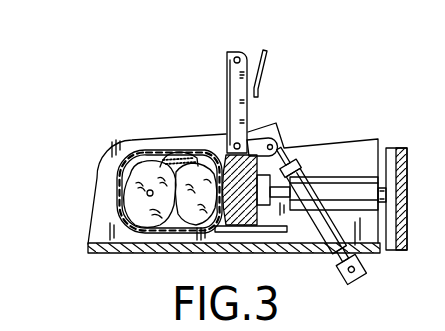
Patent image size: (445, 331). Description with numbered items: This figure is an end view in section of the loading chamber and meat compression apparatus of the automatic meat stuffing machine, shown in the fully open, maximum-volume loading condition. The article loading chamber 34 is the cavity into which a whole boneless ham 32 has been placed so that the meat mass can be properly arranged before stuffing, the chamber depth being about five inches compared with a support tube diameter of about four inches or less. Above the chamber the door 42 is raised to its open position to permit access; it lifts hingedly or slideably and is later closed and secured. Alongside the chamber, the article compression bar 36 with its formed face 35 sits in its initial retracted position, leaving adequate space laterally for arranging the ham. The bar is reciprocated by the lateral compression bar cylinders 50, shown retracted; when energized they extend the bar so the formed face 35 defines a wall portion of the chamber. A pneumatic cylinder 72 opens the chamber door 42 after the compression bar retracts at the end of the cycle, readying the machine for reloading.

The whole boneless ham 32 is at (172, 158).
The article loading chamber 34 is at (117, 182).
The formed face 35 is at (190, 165).
The article compression bar 36 is at (255, 142).
The door 42 is at (227, 53).
The lateral compression bar cylinders 50 is at (340, 178).
The pneumatic cylinder 72 is at (307, 172).